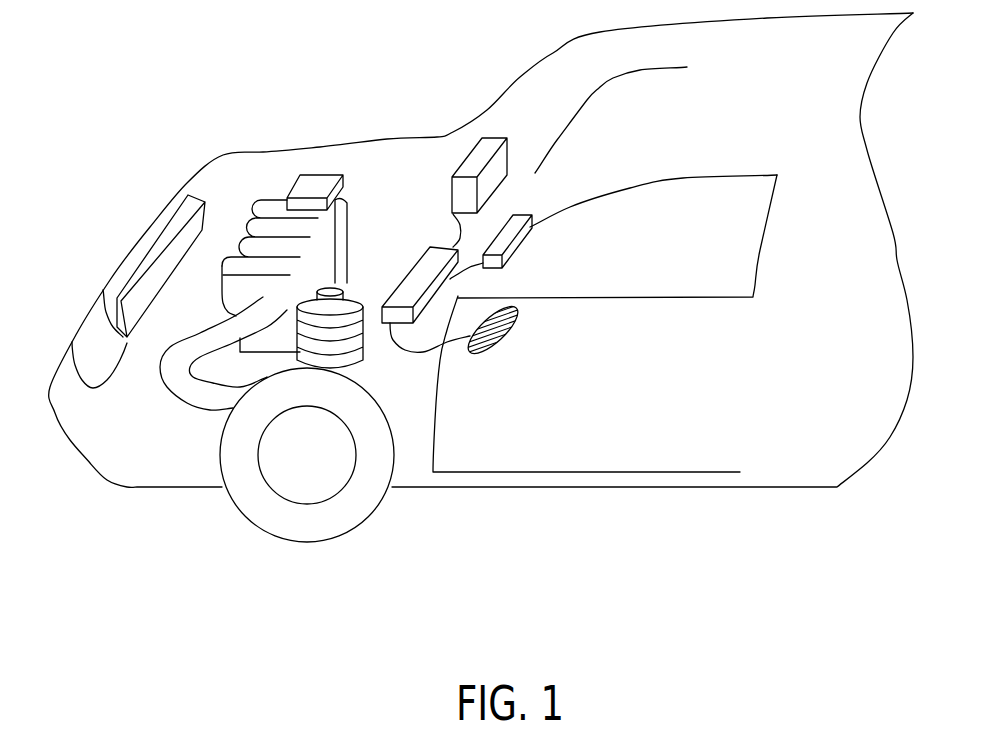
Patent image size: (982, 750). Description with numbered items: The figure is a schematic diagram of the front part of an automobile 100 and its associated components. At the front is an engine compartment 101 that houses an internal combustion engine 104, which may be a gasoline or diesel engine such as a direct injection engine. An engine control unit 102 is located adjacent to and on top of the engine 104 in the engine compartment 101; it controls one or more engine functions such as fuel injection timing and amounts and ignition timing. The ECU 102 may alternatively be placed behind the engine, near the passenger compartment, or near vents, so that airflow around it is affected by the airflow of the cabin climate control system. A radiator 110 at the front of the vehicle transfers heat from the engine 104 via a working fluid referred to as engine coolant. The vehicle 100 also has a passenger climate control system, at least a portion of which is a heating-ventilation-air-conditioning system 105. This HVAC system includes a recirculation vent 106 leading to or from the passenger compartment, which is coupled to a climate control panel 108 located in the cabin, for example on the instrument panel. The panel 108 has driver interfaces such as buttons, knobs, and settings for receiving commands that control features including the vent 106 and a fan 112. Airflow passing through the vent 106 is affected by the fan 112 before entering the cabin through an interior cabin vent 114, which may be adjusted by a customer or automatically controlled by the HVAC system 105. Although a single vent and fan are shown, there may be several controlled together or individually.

The automobile 100 is at (420, 548).
The engine compartment 101 is at (190, 312).
The engine control unit 102 is at (323, 187).
The internal combustion engine 104 is at (275, 202).
The heating-ventilation-air-conditioning system 105 is at (562, 452).
The recirculation vent 106 is at (437, 247).
The climate control panel 108 is at (517, 227).
The radiator 110 is at (150, 260).
The fan 112 is at (498, 137).
The cabin vent 114 is at (480, 352).